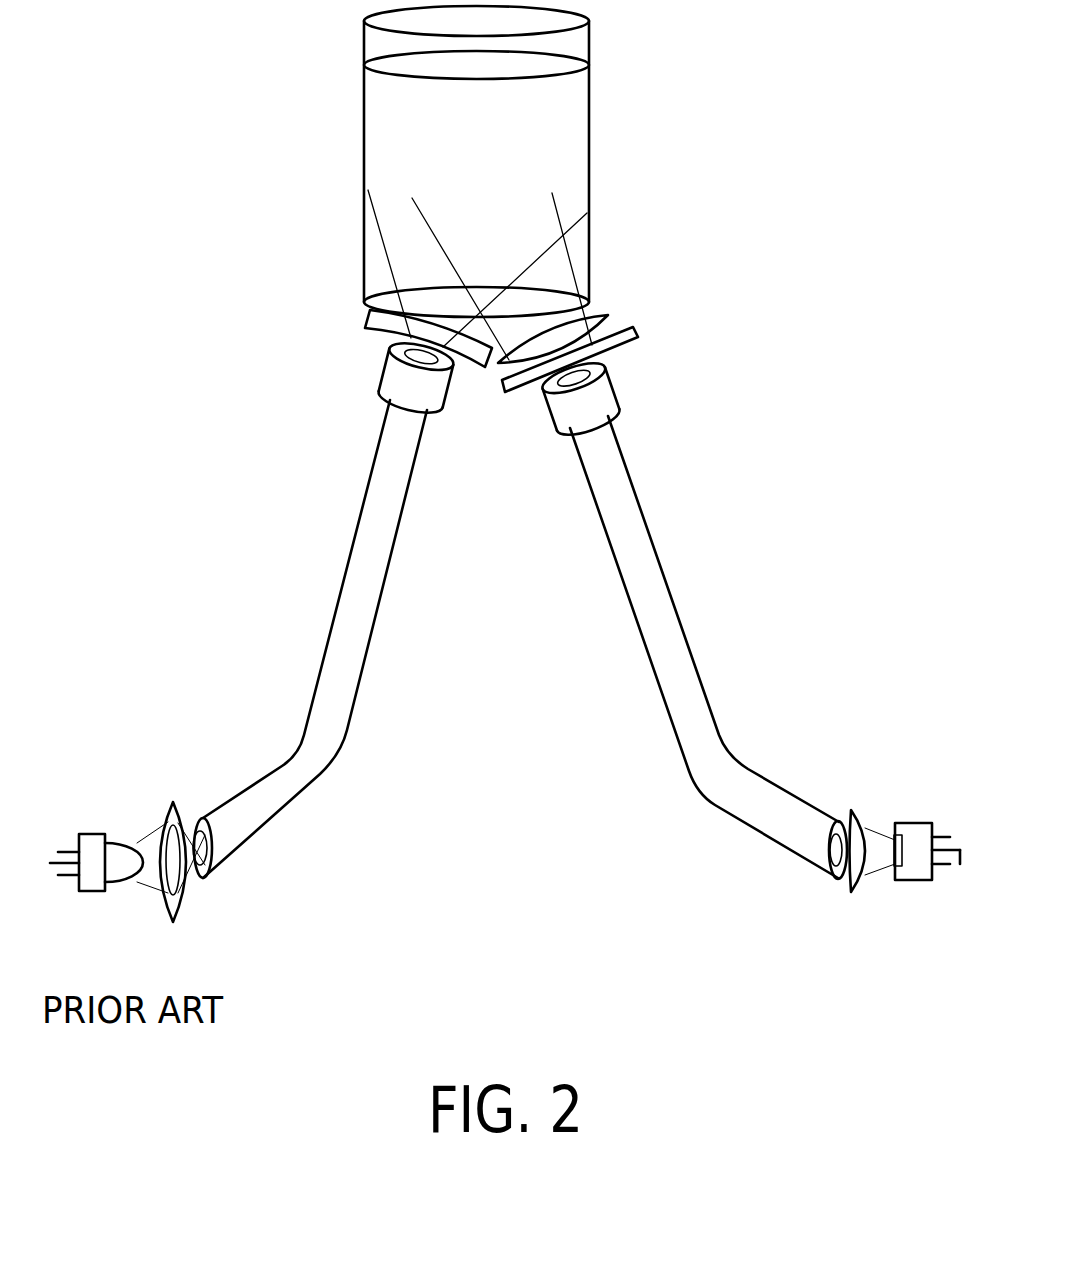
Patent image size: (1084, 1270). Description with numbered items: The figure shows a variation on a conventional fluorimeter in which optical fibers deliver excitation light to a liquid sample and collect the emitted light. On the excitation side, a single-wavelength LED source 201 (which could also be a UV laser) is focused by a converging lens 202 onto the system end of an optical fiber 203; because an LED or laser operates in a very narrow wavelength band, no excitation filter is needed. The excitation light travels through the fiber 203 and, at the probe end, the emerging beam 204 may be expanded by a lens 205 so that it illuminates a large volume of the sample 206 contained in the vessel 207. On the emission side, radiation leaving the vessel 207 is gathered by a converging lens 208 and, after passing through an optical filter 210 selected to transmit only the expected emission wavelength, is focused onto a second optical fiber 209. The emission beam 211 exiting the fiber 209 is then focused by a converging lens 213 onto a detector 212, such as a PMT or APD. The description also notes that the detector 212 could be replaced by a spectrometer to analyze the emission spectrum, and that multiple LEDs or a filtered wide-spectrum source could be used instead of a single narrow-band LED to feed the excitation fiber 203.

The LED source 201 is at (118, 837).
The converging lens 202 is at (165, 802).
The optical fiber 203 is at (330, 718).
The emerging beam 204 is at (393, 343).
The lens 205 is at (370, 317).
The sample 206 is at (390, 140).
The vessel 207 is at (600, 45).
The converging lens 208 is at (605, 308).
The second optical fiber 209 is at (642, 588).
The optical filter 210 is at (640, 328).
The emission beam 211 is at (843, 827).
The detector 212 is at (910, 820).
The converging lens 213 is at (847, 888).